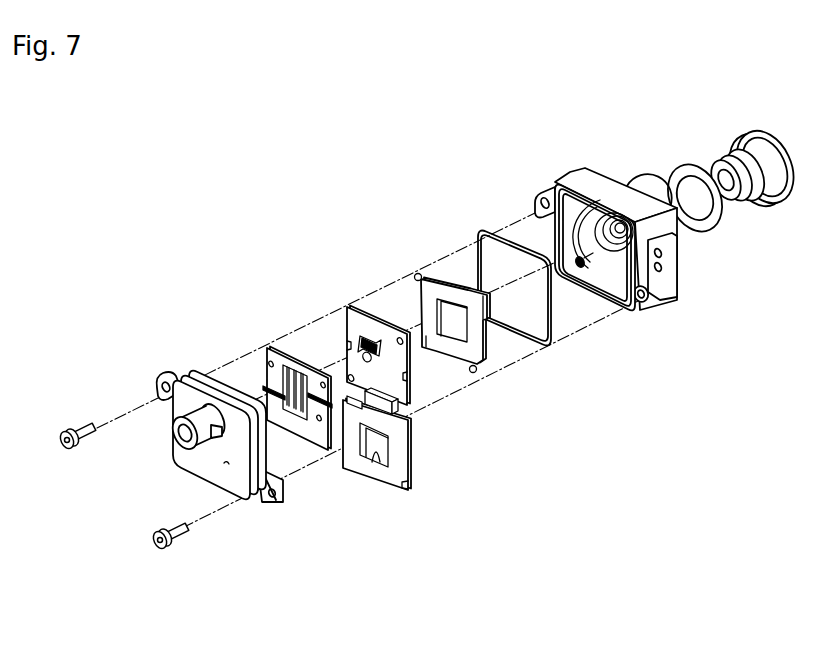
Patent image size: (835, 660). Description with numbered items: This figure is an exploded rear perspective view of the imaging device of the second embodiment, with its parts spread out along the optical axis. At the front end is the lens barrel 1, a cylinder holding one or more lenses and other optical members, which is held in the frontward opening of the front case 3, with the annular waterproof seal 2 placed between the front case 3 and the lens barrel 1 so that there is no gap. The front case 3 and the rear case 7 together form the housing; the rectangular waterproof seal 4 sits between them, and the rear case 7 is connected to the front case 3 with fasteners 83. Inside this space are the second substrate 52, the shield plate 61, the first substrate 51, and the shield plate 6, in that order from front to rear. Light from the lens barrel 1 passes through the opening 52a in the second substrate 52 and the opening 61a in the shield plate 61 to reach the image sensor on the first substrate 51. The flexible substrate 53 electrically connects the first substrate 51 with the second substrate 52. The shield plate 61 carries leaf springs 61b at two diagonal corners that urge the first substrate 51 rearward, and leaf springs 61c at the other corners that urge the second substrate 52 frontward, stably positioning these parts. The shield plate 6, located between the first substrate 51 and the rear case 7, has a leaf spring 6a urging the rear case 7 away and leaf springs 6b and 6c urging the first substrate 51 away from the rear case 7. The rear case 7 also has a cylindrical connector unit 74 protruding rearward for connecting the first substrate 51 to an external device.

The lens barrel 1 is at (758, 126).
The waterproof seal 2 is at (686, 168).
The front case 3 is at (595, 183).
The waterproof seal 4 is at (509, 232).
The first substrate 51 is at (372, 311).
The second substrate 52 is at (394, 495).
The opening 52a is at (378, 462).
The flexible substrate 53 is at (400, 414).
The shield plate 6 is at (277, 391).
The leaf spring 6a is at (261, 385).
The leaf spring 6b is at (322, 455).
The leaf spring 6c is at (262, 383).
The shield plate 61 is at (452, 319).
The opening 61a is at (457, 325).
The leaf spring 61b is at (418, 274).
The leaf spring 61c is at (480, 298).
The rear case 7 is at (197, 385).
The connector unit 74 is at (168, 374).
The fastener 83 is at (76, 428).